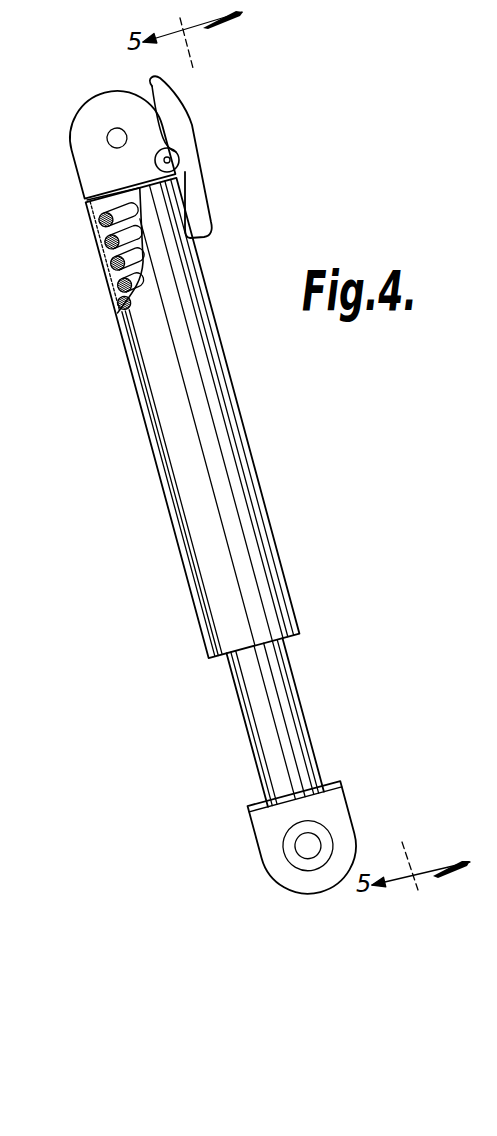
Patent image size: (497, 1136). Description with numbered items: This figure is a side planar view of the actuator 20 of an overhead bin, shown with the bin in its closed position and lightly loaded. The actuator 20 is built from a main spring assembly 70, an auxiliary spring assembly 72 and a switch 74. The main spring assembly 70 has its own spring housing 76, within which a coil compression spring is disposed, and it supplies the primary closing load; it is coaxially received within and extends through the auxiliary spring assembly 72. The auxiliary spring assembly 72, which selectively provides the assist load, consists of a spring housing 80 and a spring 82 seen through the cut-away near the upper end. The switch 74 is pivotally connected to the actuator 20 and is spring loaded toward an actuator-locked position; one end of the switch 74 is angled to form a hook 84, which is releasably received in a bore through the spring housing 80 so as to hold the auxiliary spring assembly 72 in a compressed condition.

The actuator 20 is at (257, 437).
The main spring assembly 70 is at (307, 694).
The auxiliary spring assembly 72 is at (284, 549).
The switch 74 is at (207, 166).
The spring housing 76 is at (244, 718).
The spring housing 80 is at (173, 527).
The spring 82 is at (88, 228).
The hook 84 is at (213, 235).